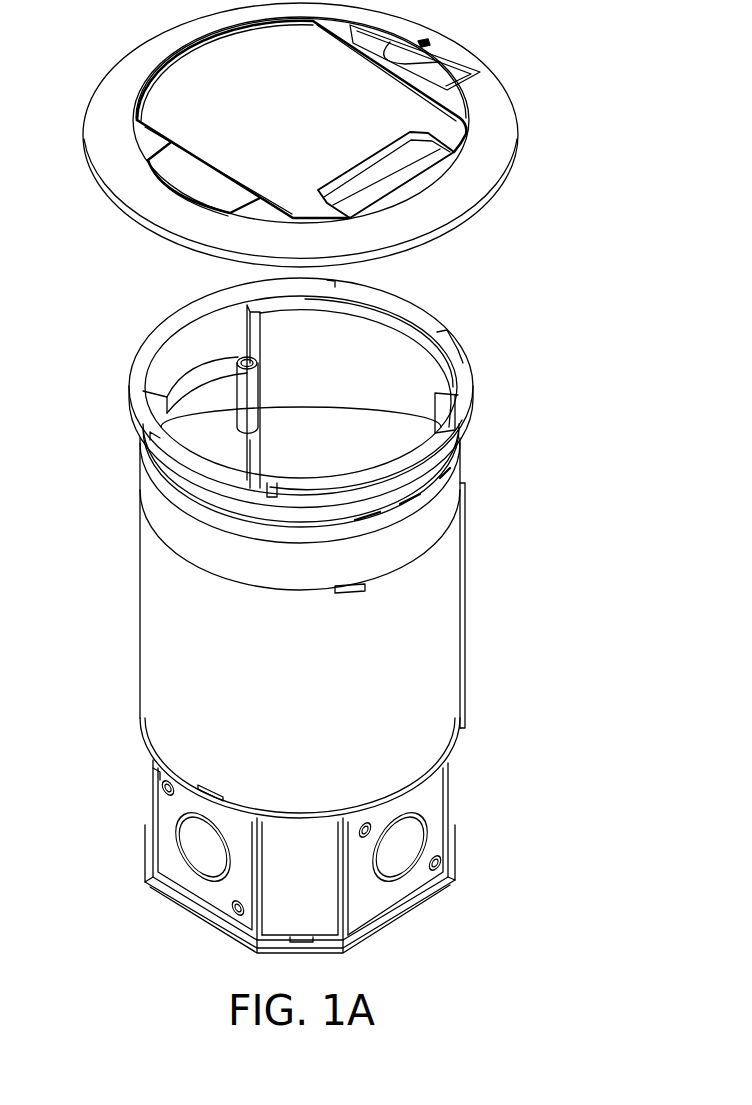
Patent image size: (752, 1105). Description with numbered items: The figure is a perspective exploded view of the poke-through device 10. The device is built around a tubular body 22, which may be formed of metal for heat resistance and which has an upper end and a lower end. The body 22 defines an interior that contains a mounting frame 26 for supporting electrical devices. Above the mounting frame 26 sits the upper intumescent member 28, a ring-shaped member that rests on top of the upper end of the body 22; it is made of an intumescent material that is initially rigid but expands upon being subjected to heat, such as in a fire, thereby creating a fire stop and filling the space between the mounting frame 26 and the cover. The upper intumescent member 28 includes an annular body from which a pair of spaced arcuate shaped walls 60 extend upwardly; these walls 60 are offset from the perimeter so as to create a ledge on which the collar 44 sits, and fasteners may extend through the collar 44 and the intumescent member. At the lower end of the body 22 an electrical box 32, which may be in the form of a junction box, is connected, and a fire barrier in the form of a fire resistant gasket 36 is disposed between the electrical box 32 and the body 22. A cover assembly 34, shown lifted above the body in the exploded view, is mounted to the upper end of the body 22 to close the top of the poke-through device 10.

The poke-through device 10 is at (347, 606).
The tubular body 22 is at (157, 603).
The mounting frame 26 is at (247, 464).
The upper intumescent member 28 is at (408, 396).
The electrical box 32 is at (155, 842).
The cover assembly 34 is at (547, 133).
The fire resistant gasket 36 is at (160, 778).
The collar 44 is at (460, 450).
The arcuate shaped walls 60 is at (282, 360).